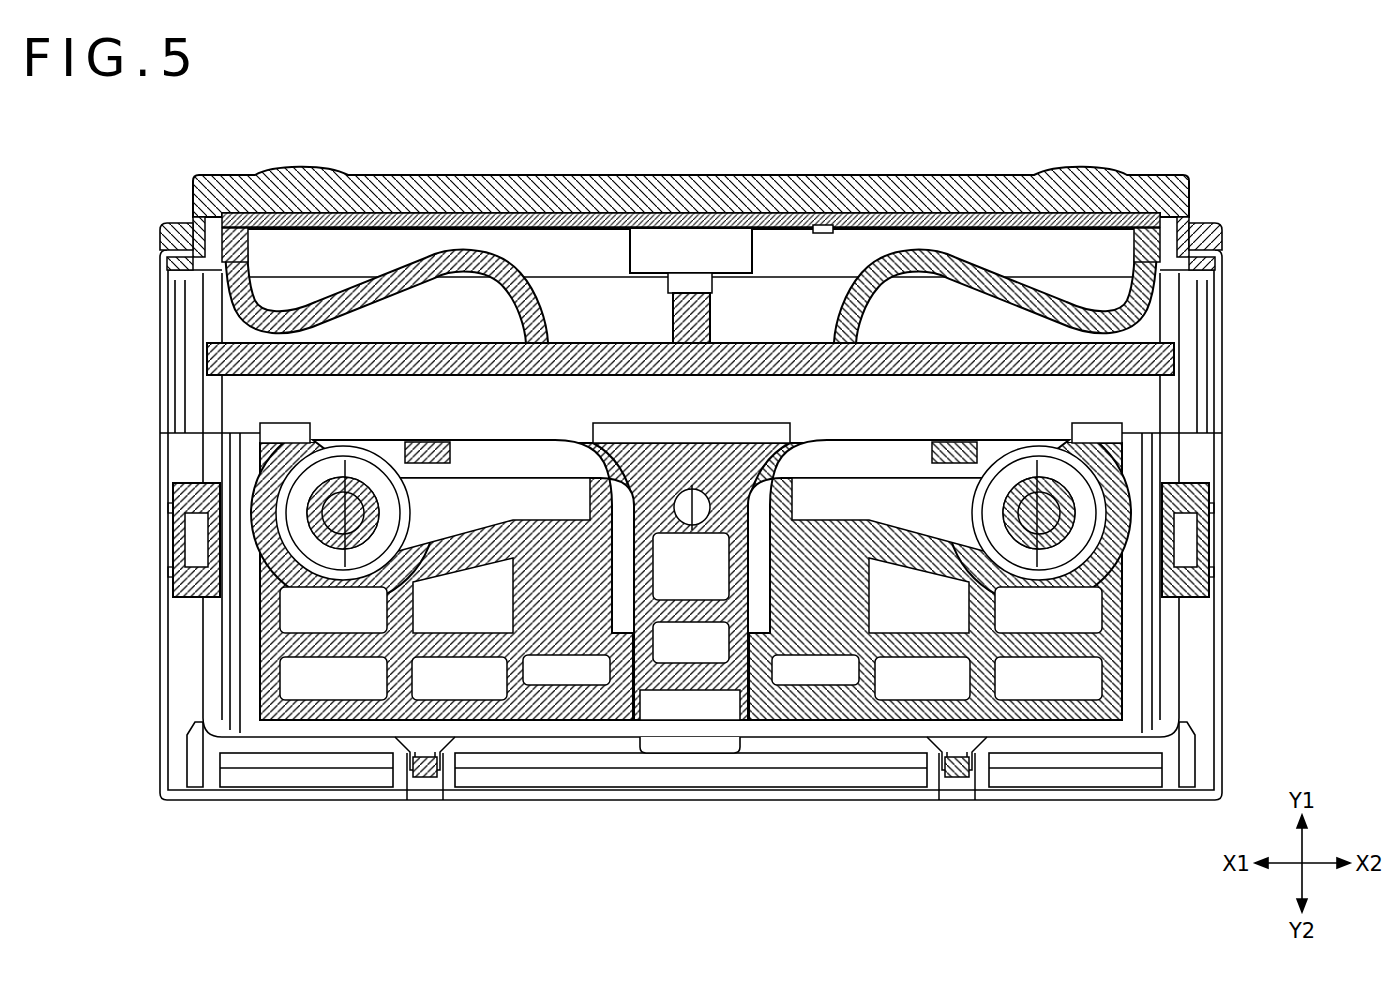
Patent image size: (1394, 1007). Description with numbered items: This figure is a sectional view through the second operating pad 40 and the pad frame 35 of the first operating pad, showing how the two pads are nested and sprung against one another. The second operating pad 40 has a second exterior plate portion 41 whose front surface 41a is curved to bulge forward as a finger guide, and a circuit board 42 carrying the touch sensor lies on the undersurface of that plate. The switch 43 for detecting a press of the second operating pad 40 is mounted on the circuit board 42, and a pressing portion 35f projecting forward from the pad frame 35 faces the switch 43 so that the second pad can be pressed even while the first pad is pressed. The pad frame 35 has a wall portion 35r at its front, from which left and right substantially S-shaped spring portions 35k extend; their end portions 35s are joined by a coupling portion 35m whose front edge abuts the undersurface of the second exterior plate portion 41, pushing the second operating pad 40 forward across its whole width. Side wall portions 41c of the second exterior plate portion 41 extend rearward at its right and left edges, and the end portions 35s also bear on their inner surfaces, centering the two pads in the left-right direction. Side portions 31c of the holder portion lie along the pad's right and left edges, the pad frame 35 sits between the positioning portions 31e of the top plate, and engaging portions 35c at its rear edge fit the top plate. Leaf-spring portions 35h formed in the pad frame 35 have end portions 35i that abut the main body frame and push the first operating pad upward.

The side portions 31c is at (175, 238).
The positioning portions 31e is at (182, 462).
The pad frame 35 is at (1020, 240).
The engaging portions 35c is at (425, 777).
The pressing portion 35f is at (680, 325).
The spring portions 35h is at (516, 490).
The end portions 35i is at (343, 495).
The spring portions 35k is at (410, 270).
The coupling portion 35m is at (800, 230).
The wall portion 35r is at (780, 352).
The end portions 35s is at (240, 228).
The second operating pad 40 is at (848, 122).
The second exterior plate portion 41 is at (846, 186).
The front surface 41a is at (185, 263).
The side wall portions 41c is at (196, 237).
The circuit board 42 is at (888, 222).
The switch 43 is at (690, 236).